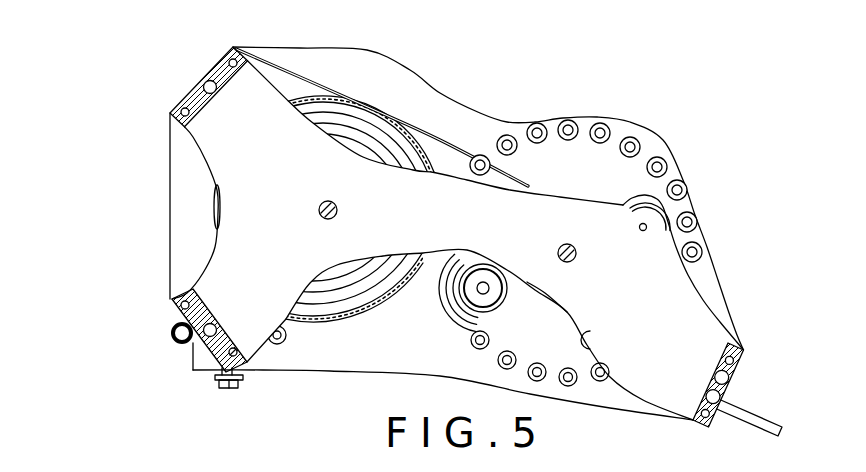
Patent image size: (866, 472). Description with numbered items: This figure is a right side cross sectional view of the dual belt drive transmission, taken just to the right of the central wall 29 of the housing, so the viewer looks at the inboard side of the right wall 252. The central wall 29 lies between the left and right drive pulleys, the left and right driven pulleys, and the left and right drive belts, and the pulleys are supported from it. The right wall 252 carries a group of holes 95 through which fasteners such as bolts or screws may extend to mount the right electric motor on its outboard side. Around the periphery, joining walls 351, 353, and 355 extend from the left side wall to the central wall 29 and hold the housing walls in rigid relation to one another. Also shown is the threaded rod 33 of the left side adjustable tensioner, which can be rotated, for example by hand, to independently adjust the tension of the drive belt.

The right wall 252 is at (440, 118).
The central wall 29 is at (687, 313).
The holes 95 is at (660, 158).
The joining wall 353 is at (193, 100).
The joining wall 355 is at (183, 321).
The threaded rod 33 is at (782, 427).
The joining wall 351 is at (744, 350).